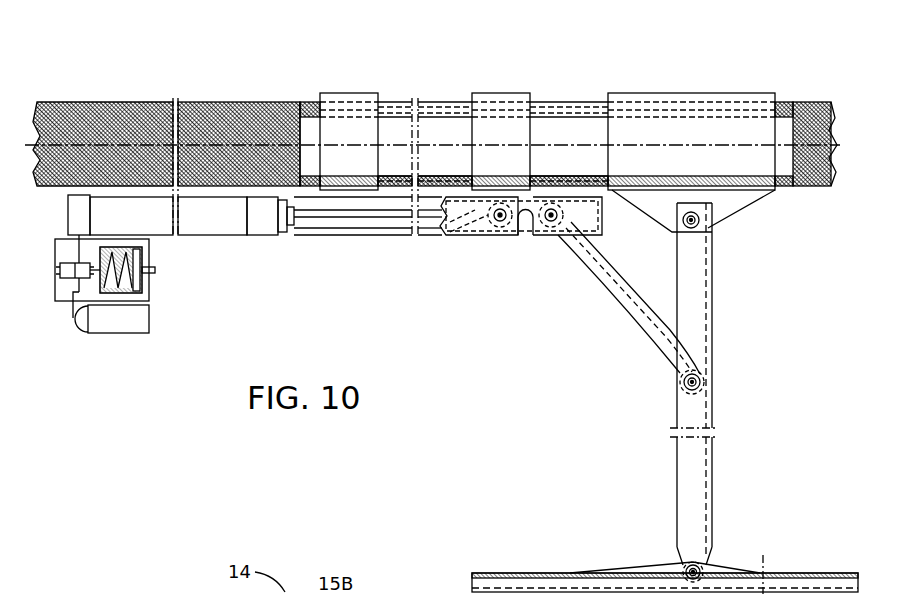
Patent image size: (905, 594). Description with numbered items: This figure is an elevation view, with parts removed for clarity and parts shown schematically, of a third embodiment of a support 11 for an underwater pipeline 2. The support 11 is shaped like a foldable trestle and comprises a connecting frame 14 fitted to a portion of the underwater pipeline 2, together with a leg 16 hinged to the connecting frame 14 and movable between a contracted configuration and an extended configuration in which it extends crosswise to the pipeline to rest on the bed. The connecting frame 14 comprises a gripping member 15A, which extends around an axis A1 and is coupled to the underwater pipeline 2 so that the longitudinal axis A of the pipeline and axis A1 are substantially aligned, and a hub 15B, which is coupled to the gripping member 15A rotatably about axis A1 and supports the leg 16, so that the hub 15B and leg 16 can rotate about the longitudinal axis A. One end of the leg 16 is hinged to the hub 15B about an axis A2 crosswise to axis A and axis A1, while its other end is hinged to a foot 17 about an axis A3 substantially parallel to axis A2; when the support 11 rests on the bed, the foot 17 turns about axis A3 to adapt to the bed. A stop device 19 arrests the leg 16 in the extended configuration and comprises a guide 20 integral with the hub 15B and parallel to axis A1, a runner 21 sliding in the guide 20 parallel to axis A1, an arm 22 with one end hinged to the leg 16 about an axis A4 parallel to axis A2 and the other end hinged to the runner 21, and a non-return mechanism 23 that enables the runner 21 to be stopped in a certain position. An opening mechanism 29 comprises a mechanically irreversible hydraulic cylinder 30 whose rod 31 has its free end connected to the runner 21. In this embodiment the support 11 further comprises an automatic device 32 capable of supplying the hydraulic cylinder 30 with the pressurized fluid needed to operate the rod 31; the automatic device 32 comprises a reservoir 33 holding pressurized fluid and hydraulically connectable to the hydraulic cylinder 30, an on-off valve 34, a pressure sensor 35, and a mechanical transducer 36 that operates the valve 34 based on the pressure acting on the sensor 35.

The underwater pipeline 2 is at (205, 125).
The longitudinal axis A is at (105, 140).
The support 11 is at (667, 392).
The connecting frame 14 is at (589, 72).
The gripping member 15A is at (555, 96).
The hub 15B is at (688, 90).
The axis A1 is at (340, 145).
The leg 16 is at (720, 291).
The foot 17 is at (838, 578).
The stop device 19 is at (665, 384).
The guide 20 is at (535, 210).
The runner 21 is at (544, 195).
The arm 22 is at (630, 300).
The non-return mechanism 23 is at (530, 240).
The opening mechanism 29 is at (205, 288).
The hydraulic cylinder 30 is at (262, 224).
The rod 31 is at (355, 215).
The automatic device 32 is at (74, 333).
The reservoir 33 is at (90, 343).
The on-off valve 34 is at (62, 266).
The pressure sensor 35 is at (150, 265).
The mechanical transducer 36 is at (128, 300).
The axis A2 is at (712, 226).
The axis A3 is at (712, 560).
The axis A4 is at (705, 386).